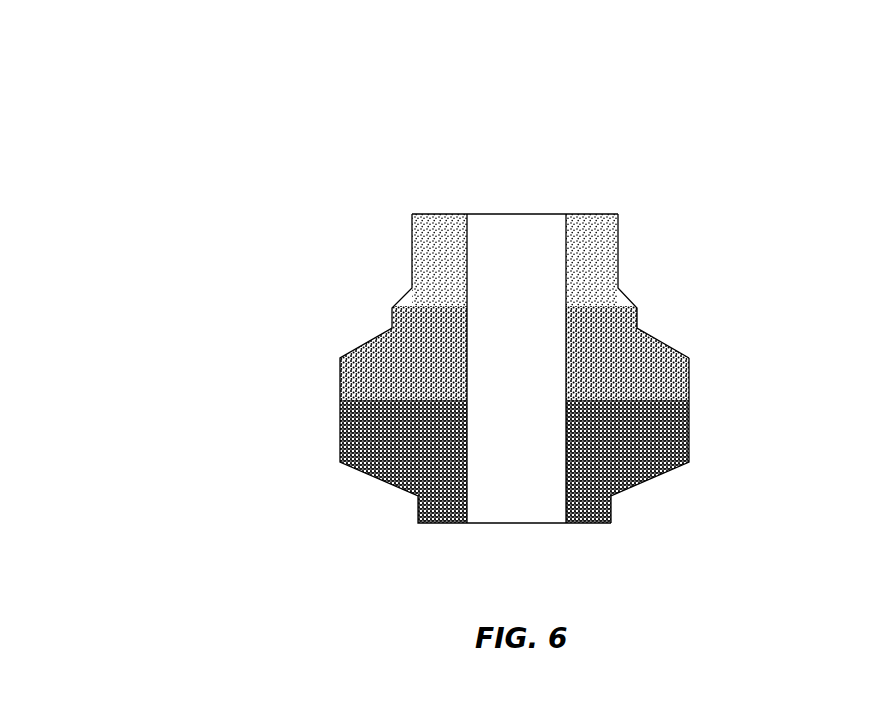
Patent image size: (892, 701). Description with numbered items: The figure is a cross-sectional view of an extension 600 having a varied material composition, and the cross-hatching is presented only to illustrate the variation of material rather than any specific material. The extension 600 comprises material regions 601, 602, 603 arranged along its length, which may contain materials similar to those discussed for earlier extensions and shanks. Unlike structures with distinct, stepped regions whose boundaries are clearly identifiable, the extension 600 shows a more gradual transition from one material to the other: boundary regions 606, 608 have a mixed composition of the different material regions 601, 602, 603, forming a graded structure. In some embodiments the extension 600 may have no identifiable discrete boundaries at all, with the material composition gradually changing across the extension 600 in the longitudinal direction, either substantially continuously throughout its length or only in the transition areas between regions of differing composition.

The extension 600 is at (217, 105).
The material region 601 is at (432, 462).
The material region 602 is at (395, 362).
The material region 603 is at (438, 282).
The boundary region 606 is at (697, 393).
The boundary region 608 is at (675, 275).